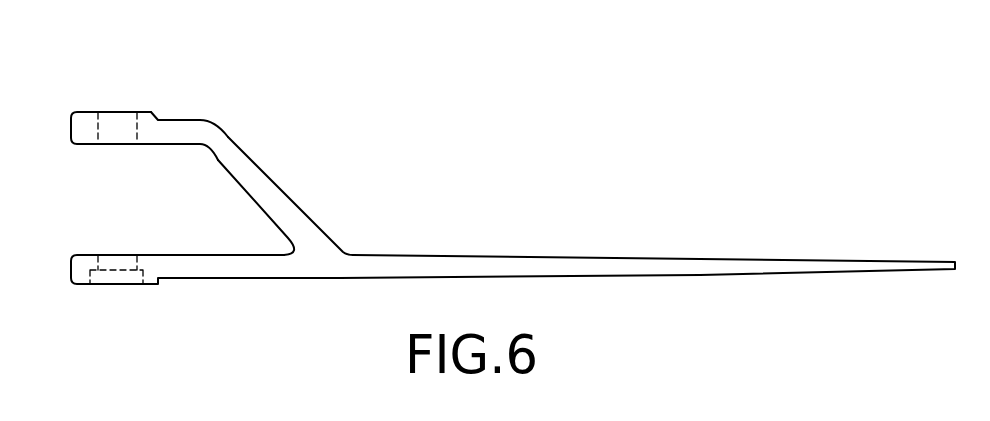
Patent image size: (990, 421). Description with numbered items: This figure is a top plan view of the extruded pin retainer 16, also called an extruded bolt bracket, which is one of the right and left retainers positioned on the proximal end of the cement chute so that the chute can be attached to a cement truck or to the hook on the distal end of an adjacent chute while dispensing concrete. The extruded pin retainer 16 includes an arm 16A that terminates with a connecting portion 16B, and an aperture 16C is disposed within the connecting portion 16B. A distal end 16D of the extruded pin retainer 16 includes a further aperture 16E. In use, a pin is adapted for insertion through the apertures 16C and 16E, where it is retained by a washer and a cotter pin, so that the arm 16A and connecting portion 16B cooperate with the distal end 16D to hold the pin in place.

The extruded pin retainer 16 is at (453, 267).
The arm 16A is at (258, 181).
The connecting portion 16B is at (178, 128).
The aperture 16C is at (118, 127).
The distal end 16D is at (205, 265).
The aperture 16E is at (115, 265).